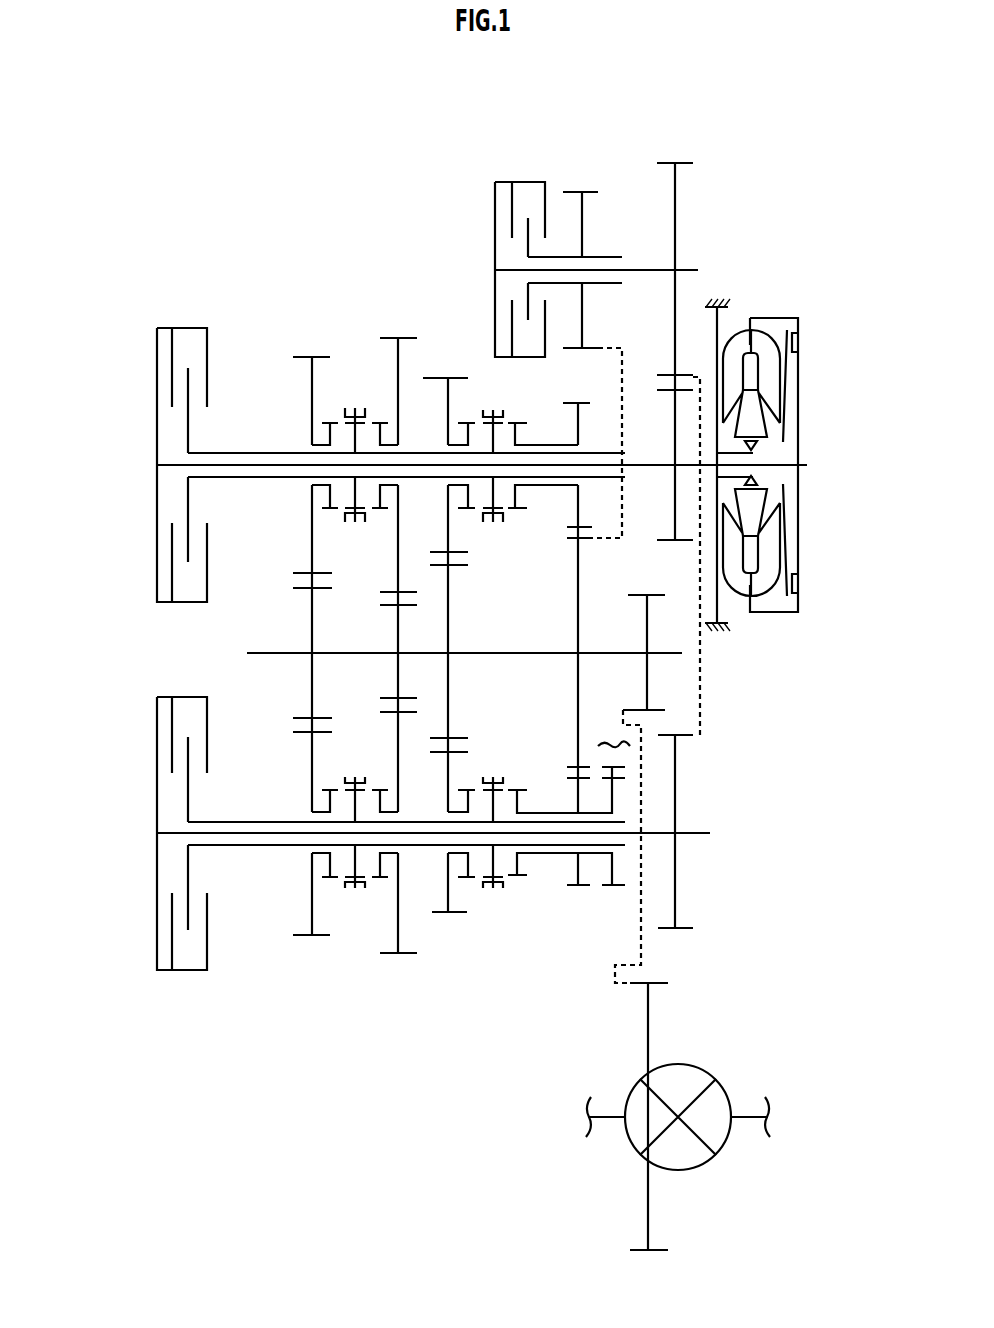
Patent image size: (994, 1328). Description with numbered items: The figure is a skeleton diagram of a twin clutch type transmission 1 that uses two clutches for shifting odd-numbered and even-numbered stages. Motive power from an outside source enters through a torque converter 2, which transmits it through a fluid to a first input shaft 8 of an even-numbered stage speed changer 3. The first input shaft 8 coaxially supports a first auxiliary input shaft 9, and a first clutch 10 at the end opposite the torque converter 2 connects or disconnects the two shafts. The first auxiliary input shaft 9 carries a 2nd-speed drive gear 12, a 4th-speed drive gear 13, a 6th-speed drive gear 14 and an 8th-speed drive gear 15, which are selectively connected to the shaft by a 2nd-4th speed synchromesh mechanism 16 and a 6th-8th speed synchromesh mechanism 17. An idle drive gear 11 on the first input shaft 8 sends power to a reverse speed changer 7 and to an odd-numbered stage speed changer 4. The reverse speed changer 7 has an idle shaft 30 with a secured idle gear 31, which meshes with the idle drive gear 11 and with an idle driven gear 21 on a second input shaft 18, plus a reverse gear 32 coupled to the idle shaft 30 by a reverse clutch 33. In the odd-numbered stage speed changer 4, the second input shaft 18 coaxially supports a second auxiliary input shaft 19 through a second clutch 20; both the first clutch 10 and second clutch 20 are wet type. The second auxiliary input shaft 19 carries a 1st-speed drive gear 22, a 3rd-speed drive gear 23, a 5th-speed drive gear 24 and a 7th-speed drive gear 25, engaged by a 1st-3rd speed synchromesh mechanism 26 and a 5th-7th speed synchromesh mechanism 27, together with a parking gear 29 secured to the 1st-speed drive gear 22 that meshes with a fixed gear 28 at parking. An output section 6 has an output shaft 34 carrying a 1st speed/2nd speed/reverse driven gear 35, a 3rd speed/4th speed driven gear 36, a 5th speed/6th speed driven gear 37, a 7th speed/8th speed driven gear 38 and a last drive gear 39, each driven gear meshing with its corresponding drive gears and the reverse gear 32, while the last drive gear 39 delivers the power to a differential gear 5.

The transmission 1 is at (803, 108).
The torque converter 2 is at (806, 312).
The even-numbered stage speed changer 3 is at (126, 375).
The odd-numbered stage speed changer 4 is at (126, 765).
The differential gear 5 is at (722, 1050).
The output section 6 is at (164, 647).
The reverse speed changer 7 is at (438, 198).
The first input shaft 8 is at (651, 463).
The first auxiliary input shaft 9 is at (242, 452).
The first clutch 10 is at (188, 327).
The idle drive gear 11 is at (671, 541).
The 2nd-speed drive gear 12 is at (583, 403).
The 4th-speed drive gear 13 is at (432, 378).
The 6th-speed drive gear 14 is at (305, 357).
The 8th-speed drive gear 15 is at (392, 338).
The 2nd-4th speed synchromesh mechanism 16 is at (517, 404).
The 6th-8th speed synchromesh mechanism 17 is at (358, 408).
The second input shaft 18 is at (696, 833).
The second auxiliary input shaft 19 is at (252, 822).
The second clutch 20 is at (183, 970).
The idle driven gear 21 is at (681, 735).
The 1st-speed drive gear 22 is at (573, 886).
The 3rd-speed drive gear 23 is at (436, 913).
The 5th-speed drive gear 24 is at (296, 936).
The 7th-speed drive gear 25 is at (386, 954).
The 1st-3rd speed synchromesh mechanism 26 is at (498, 777).
The 5th-7th speed synchromesh mechanism 27 is at (357, 777).
The fixed gear 28 is at (613, 753).
The parking gear 29 is at (620, 886).
The idle shaft 30 is at (694, 270).
The idle gear 31 is at (686, 162).
The reverse gear 32 is at (594, 192).
The reverse clutch 33 is at (522, 182).
The output shaft 34 is at (528, 653).
The 1st speed/2nd speed/reverse driven gear 35 is at (585, 541).
The 3rd speed/4th speed driven gear 36 is at (459, 569).
The 5th speed/6th speed driven gear 37 is at (298, 586).
The 7th speed/8th speed driven gear 38 is at (386, 604).
The last drive gear 39 is at (662, 710).